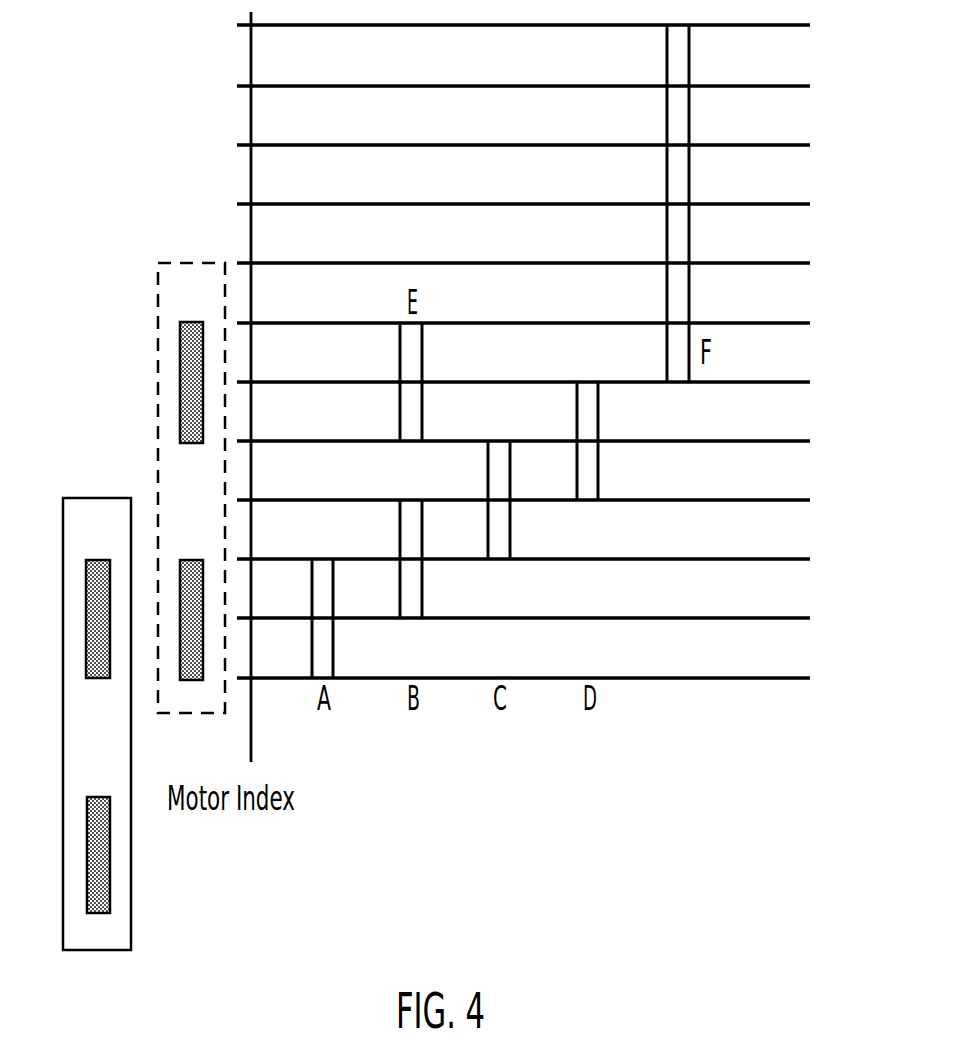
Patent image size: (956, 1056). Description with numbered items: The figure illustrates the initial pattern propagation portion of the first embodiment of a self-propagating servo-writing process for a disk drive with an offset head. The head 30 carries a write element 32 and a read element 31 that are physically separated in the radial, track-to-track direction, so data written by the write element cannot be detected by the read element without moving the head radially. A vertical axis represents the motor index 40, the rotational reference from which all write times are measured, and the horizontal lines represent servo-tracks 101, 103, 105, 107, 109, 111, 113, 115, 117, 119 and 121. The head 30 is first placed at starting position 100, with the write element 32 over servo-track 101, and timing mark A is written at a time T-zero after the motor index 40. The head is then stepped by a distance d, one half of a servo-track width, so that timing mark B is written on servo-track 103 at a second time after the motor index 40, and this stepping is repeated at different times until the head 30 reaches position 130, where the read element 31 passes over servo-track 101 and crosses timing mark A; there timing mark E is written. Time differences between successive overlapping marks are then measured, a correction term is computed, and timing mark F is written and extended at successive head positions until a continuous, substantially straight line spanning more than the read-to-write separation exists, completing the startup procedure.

The head 30 is at (100, 714).
The read element 31 is at (110, 855).
The write element 32 is at (86, 621).
The motor index 40 is at (253, 745).
The starting position 100 is at (127, 901).
The head position 130 is at (158, 412).
The servo-track 101 is at (548, 619).
The servo-track 103 is at (548, 560).
The servo-track 105 is at (548, 501).
The servo-track 107 is at (548, 442).
The servo-track 109 is at (548, 383).
The servo-track 111 is at (548, 324).
The servo-track 113 is at (548, 264).
The servo-track 115 is at (548, 205).
The servo-track 117 is at (548, 146).
The servo-track 119 is at (548, 87).
The servo-track 121 is at (548, 27).